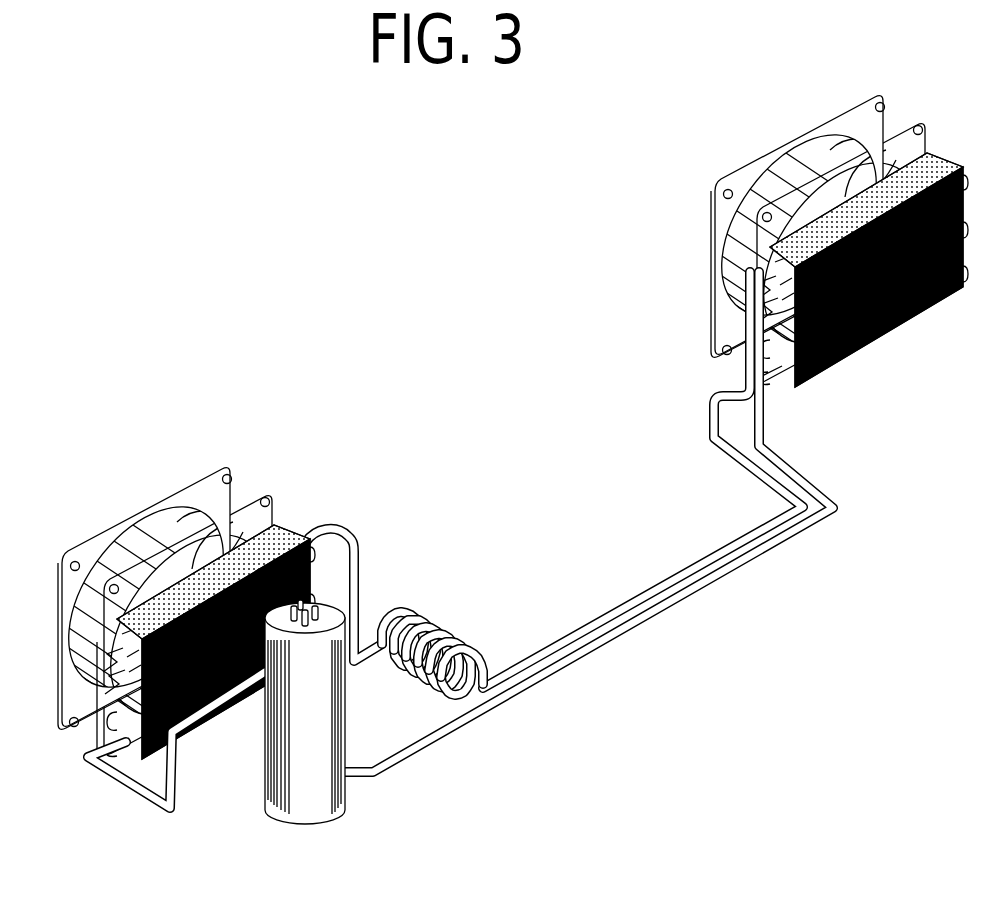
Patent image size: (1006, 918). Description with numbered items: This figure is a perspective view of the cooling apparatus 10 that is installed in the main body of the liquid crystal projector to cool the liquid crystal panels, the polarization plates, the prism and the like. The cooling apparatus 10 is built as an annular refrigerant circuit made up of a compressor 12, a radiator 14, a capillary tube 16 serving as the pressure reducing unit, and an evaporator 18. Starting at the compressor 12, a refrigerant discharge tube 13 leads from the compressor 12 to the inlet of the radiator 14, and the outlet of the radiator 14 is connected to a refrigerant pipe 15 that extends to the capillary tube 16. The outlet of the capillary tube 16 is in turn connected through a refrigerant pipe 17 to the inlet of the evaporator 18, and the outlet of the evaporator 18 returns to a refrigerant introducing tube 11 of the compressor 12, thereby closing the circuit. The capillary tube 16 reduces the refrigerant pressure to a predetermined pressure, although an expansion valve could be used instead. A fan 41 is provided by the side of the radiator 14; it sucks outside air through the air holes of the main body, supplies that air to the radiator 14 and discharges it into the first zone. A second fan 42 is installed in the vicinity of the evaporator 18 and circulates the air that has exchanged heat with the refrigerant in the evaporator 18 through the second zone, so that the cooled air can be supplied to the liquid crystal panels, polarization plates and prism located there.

The cooling apparatus 10 is at (268, 838).
The refrigerant introducing tube 11 is at (472, 717).
The compressor 12 is at (320, 808).
The refrigerant discharge tube 13 is at (148, 797).
The radiator 14 is at (293, 530).
The refrigerant pipe 15 is at (357, 553).
The capillary tube 16 is at (457, 637).
The refrigerant pipe 17 is at (623, 610).
The evaporator 18 is at (872, 344).
The fan 41 is at (153, 520).
The fan 42 is at (800, 152).